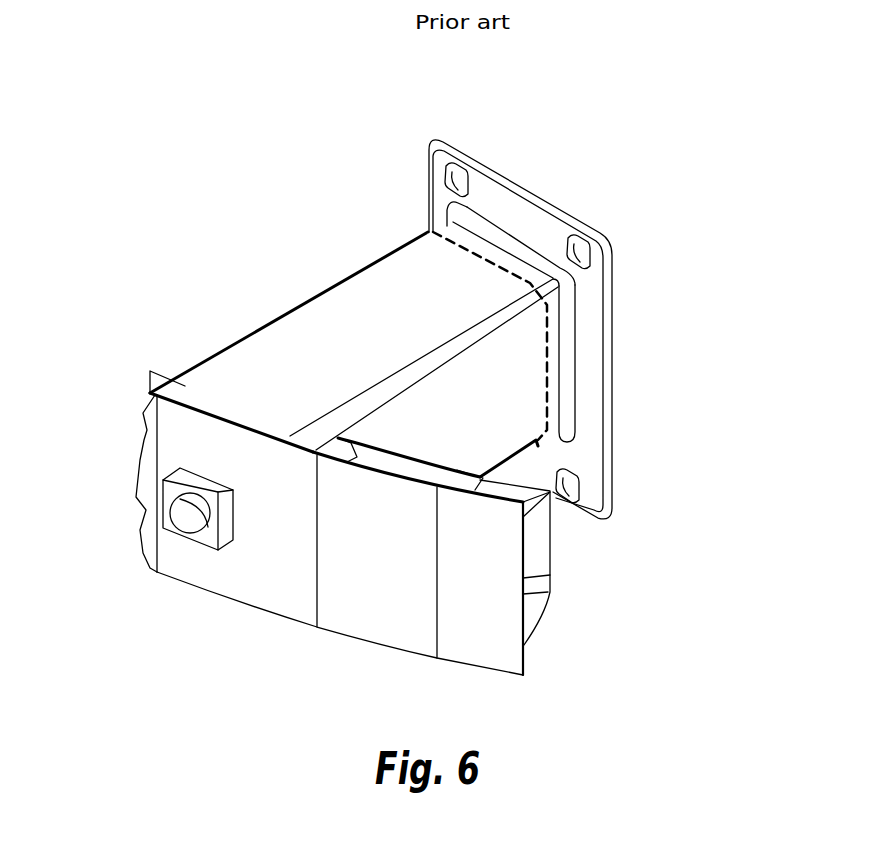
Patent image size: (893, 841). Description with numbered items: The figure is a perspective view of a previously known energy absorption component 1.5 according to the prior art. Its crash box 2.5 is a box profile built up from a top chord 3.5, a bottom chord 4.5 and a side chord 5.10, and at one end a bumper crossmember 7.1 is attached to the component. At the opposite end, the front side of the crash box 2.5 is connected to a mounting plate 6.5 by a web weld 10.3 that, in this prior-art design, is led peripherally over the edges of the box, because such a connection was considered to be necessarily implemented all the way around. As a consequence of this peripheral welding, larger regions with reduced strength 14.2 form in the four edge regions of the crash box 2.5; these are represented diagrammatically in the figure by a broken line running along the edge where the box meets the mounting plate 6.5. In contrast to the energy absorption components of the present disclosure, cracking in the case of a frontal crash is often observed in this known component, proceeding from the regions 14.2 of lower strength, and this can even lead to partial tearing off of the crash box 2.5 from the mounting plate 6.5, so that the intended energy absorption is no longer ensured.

The energy absorption component 1.5 is at (318, 270).
The crash box 2.5 is at (417, 290).
The top chord 3.5 is at (393, 343).
The bottom chord 4.5 is at (520, 470).
The side chord 5.10 is at (500, 428).
The mounting plate 6.5 is at (618, 283).
The bumper crossmember 7.1 is at (133, 421).
The web weld 10.3 is at (566, 368).
The region with reduced strength 14.2 is at (463, 226).